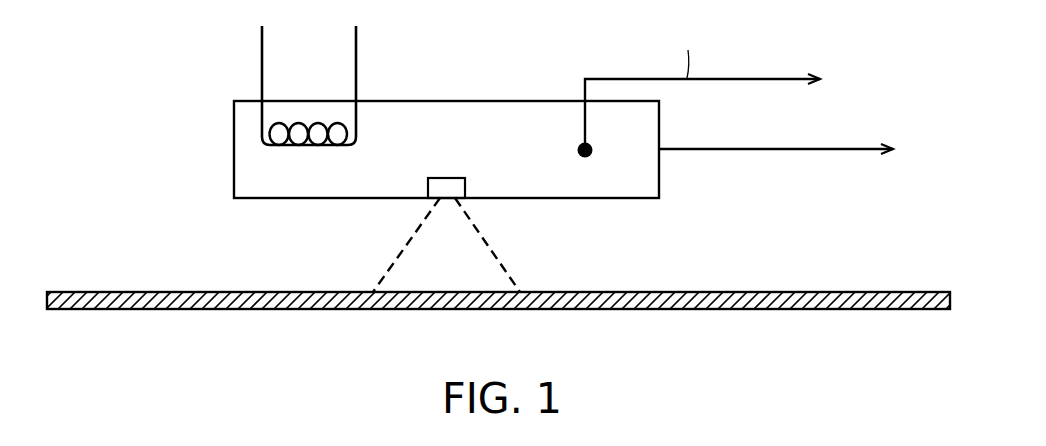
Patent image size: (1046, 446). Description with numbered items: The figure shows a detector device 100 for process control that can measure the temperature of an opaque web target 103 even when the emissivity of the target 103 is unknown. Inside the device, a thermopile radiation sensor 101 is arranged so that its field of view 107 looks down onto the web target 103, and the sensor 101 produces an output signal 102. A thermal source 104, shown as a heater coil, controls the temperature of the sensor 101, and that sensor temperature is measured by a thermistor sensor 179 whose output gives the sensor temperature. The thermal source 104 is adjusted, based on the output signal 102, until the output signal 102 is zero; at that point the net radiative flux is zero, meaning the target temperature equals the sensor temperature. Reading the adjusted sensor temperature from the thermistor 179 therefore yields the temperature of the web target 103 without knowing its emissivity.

The detector device 100 is at (398, 180).
The thermopile radiation sensor 101 is at (445, 190).
The output signal 102 is at (847, 148).
The web target 103 is at (847, 291).
The thermal source 104 is at (358, 49).
The field of view 107 is at (495, 250).
The thermistor sensor 179 is at (577, 150).